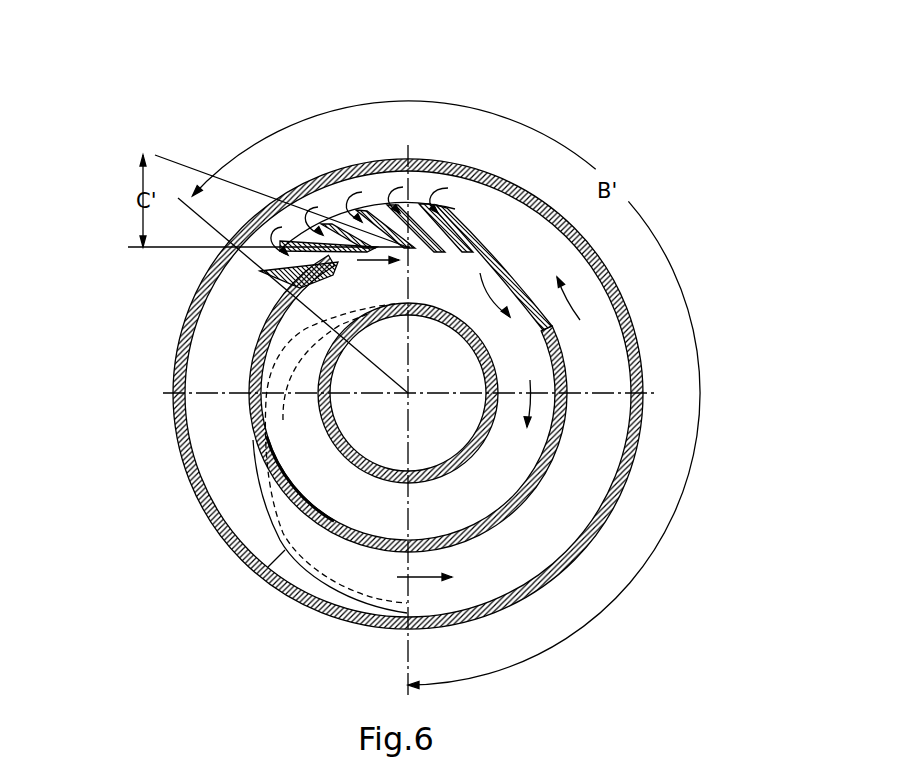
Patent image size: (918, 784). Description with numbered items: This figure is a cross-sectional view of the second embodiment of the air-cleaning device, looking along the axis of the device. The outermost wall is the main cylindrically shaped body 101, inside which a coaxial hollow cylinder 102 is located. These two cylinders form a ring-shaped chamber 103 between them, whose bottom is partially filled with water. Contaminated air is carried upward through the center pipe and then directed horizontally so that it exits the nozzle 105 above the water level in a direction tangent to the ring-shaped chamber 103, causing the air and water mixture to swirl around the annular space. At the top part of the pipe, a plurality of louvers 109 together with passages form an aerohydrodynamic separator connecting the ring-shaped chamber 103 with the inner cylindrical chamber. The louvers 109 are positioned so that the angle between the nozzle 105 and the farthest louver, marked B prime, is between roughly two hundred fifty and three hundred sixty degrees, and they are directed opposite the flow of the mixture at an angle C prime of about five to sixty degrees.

The main cylindrically shaped body 101 is at (620, 287).
The coaxial hollow cylinder 102 is at (560, 377).
The ring-shaped chamber 103 is at (483, 450).
The nozzle 105 is at (262, 577).
The louvers 109 is at (443, 210).